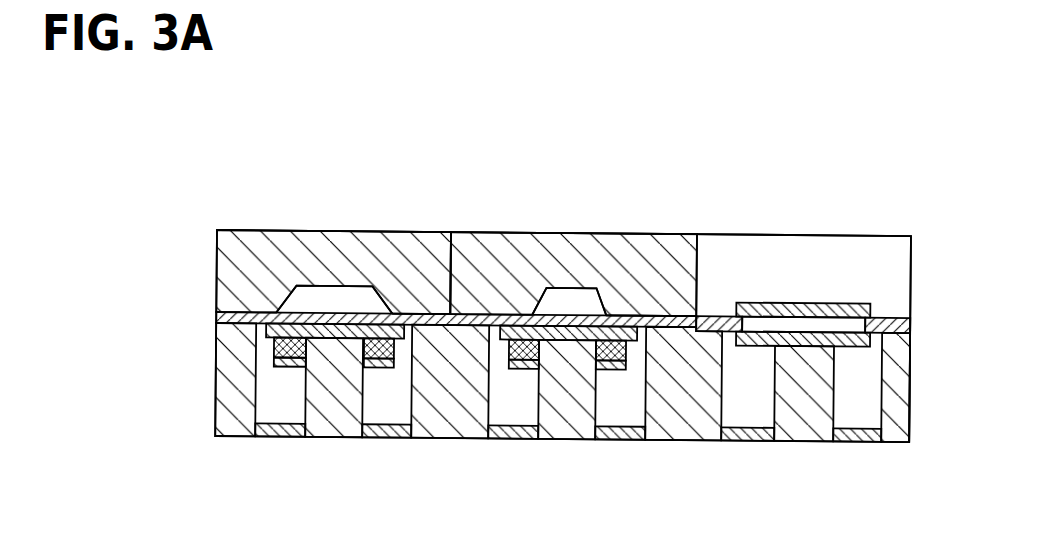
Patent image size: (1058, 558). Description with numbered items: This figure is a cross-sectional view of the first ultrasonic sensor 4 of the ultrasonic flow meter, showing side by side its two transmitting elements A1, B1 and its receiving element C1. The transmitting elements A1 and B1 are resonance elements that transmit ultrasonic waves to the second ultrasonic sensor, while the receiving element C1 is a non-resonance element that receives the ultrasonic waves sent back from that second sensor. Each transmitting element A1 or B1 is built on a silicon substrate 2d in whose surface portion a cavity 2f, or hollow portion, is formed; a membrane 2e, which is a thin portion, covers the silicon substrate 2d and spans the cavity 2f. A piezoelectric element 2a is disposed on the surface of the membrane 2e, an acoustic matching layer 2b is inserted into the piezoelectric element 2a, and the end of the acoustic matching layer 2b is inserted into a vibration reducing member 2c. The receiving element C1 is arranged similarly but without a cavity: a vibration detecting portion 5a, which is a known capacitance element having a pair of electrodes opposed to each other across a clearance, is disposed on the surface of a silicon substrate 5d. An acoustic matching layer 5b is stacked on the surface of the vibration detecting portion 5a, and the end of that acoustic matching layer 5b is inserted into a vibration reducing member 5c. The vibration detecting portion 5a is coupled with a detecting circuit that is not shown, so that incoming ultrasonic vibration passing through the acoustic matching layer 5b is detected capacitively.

The transmitting element A1 is at (244, 205).
The transmitting element B1 is at (503, 207).
The receiving element C1 is at (741, 212).
The piezoelectric element 2a is at (385, 367).
The acoustic matching layer 2b is at (335, 422).
The vibration reducing member 2c is at (270, 426).
The silicon substrate 2d is at (307, 240).
The membrane 2e is at (431, 313).
The cavity 2f is at (342, 292).
The first ultrasonic sensor 4 is at (180, 324).
The vibration detecting portion 5a is at (858, 347).
The acoustic matching layer 5b is at (807, 423).
The vibration reducing member 5c is at (740, 430).
The silicon substrate 5d is at (801, 250).